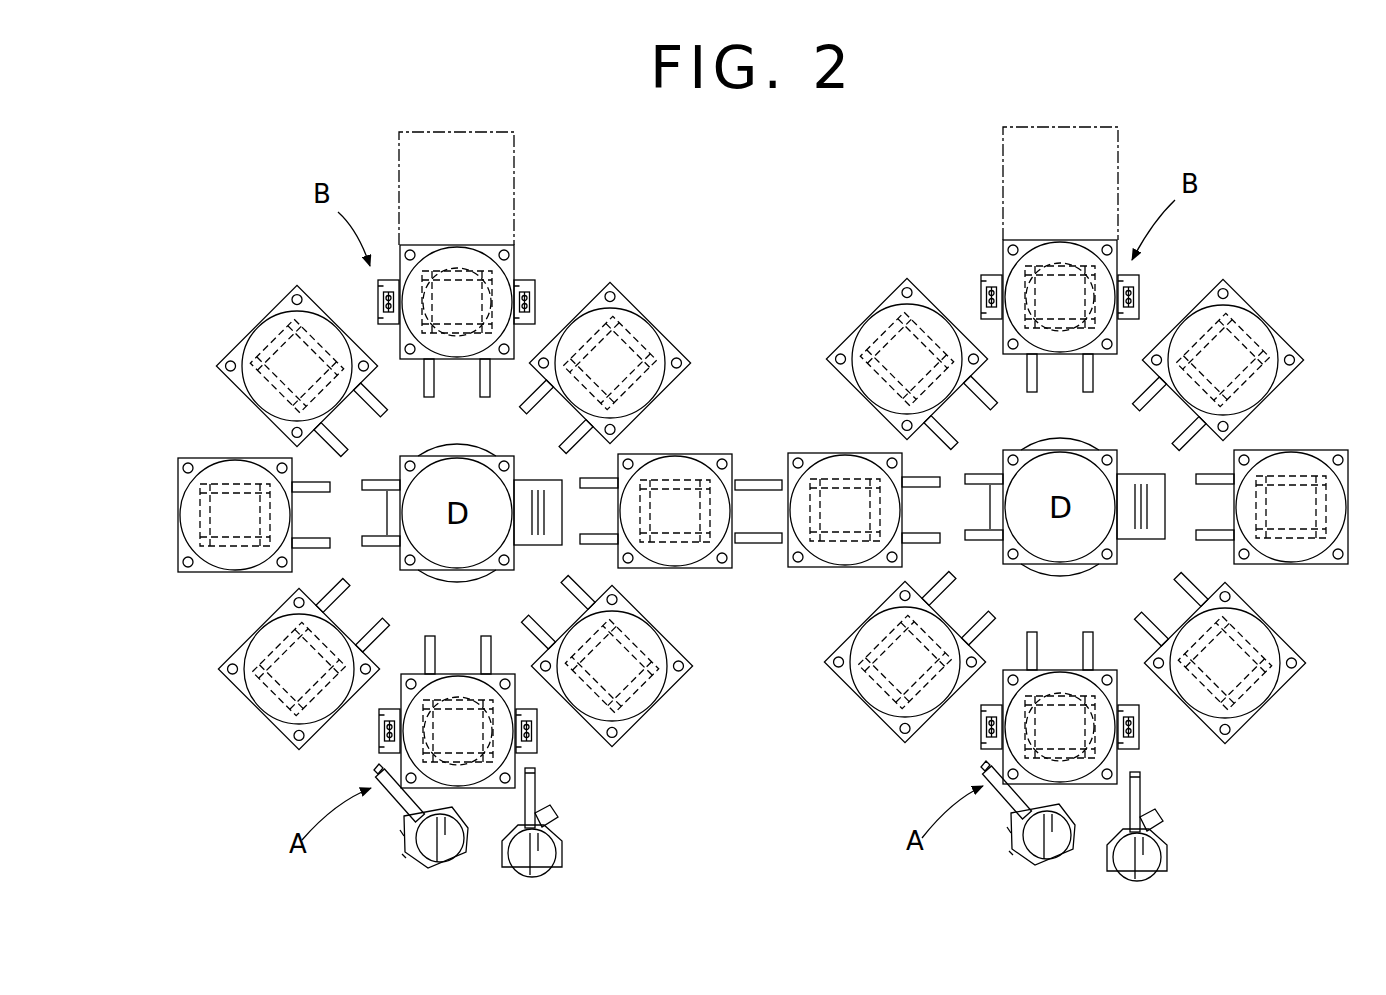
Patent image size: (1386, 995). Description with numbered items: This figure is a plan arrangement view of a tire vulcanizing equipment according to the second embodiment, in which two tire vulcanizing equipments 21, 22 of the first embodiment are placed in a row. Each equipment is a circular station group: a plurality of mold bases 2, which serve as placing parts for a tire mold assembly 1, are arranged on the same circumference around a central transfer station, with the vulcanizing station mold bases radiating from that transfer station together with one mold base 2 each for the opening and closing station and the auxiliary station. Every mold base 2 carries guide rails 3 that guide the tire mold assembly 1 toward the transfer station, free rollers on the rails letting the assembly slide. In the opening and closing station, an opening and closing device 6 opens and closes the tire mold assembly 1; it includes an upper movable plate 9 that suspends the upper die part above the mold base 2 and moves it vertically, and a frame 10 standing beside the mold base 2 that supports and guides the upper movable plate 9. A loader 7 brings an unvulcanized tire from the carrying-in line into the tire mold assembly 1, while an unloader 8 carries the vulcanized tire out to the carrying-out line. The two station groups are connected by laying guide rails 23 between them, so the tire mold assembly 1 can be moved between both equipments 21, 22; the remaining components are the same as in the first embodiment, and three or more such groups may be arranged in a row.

The tire mold assembly 1 is at (258, 344).
The mold base 2 is at (237, 503).
The guide rails 3 is at (372, 484).
The opening and closing device 6 is at (524, 270).
The loader 7 is at (427, 857).
The unloader 8 is at (548, 868).
The upper movable plate 9 is at (458, 280).
The frame 10 is at (380, 748).
The tire vulcanizing equipment 21 is at (630, 273).
The tire vulcanizing equipment 22 is at (963, 281).
The guide rails 23 is at (763, 466).